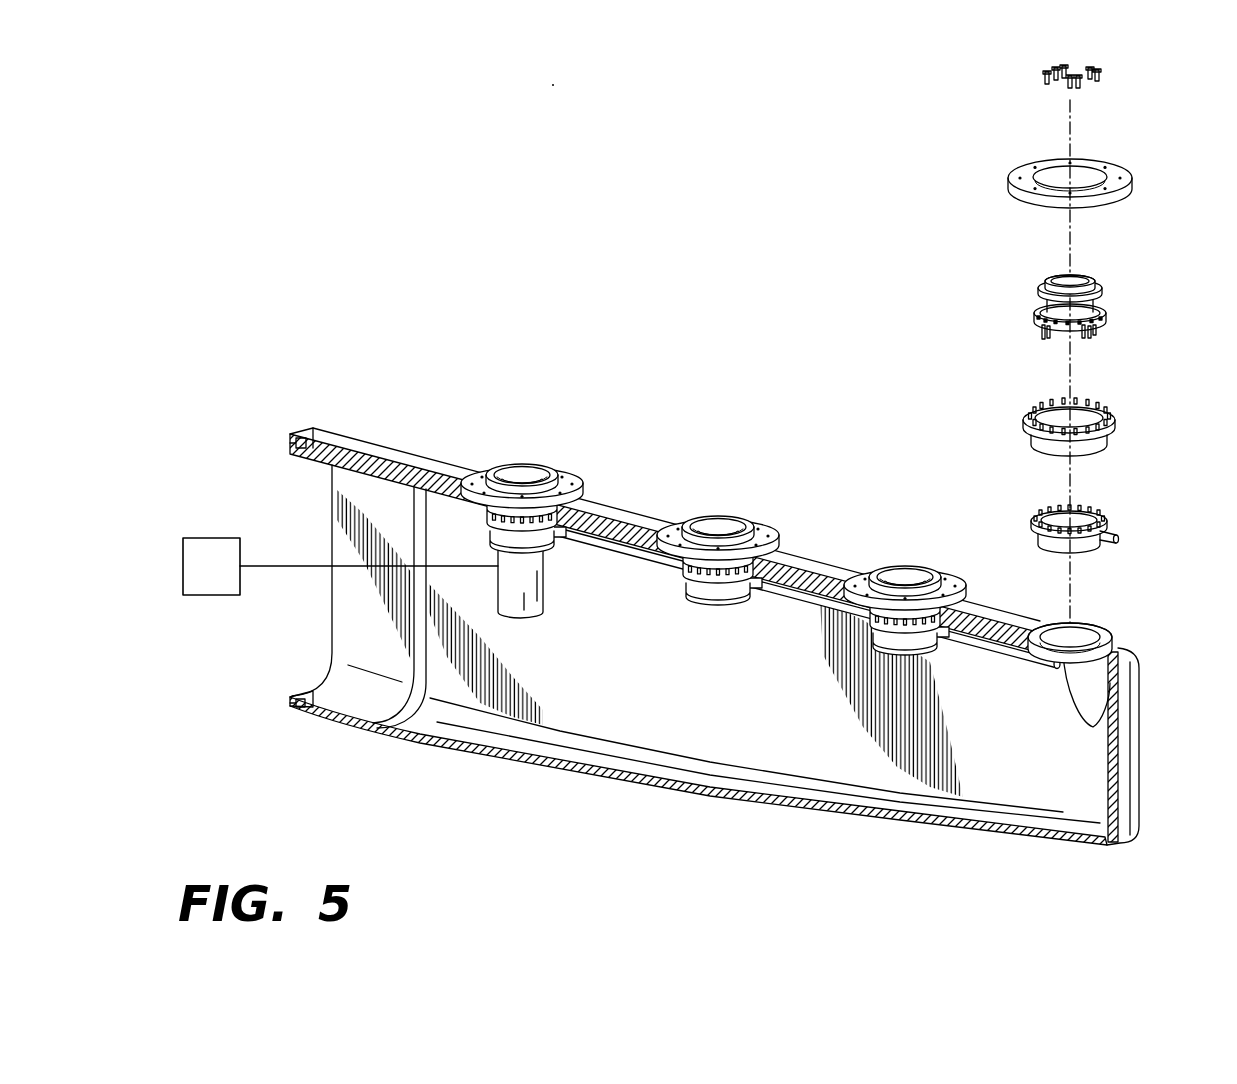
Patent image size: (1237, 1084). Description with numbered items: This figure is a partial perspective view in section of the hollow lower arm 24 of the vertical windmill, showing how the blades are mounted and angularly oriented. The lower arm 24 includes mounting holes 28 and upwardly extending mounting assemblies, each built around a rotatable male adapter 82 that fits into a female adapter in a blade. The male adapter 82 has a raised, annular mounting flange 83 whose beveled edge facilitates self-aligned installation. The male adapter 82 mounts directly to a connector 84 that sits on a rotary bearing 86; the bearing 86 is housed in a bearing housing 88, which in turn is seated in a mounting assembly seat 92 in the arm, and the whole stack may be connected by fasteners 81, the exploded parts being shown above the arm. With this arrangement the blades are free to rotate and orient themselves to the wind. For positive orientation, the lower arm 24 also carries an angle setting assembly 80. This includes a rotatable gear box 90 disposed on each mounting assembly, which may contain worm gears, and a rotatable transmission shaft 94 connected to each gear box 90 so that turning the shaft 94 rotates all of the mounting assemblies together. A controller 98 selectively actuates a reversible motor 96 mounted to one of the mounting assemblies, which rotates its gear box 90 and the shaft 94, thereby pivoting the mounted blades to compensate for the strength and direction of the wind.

The lower arm 24 is at (703, 798).
The mounting holes 28 is at (288, 440).
The angle setting assembly 80 is at (718, 419).
The fasteners 81 is at (1048, 88).
The male adapter 82 is at (841, 380).
The mounting flange 83 is at (1102, 168).
The connector 84 is at (1097, 290).
The rotary bearing 86 is at (1103, 330).
The bearing housing 88 is at (1110, 437).
The gear box 90 is at (1110, 525).
The mounting assembly seat 92 is at (1110, 628).
The transmission shaft 94 is at (624, 552).
The reversible motor 96 is at (523, 605).
The controller 98 is at (226, 580).